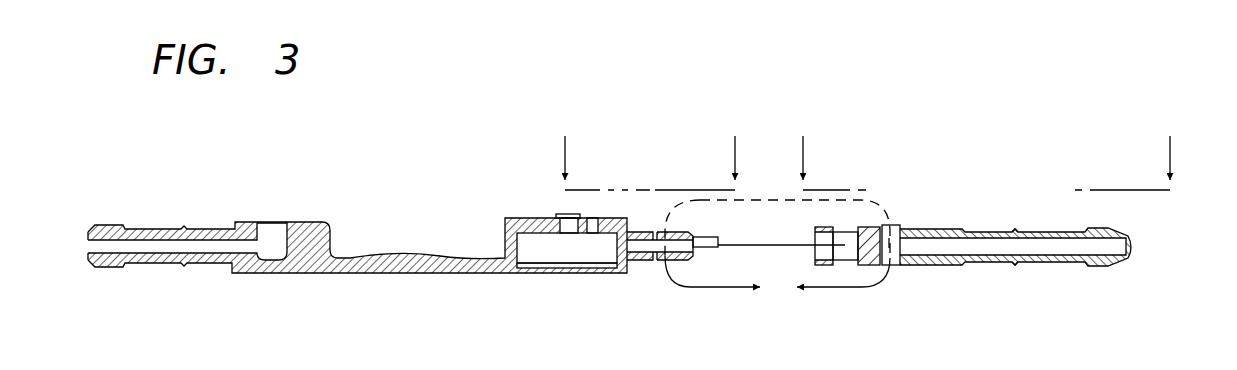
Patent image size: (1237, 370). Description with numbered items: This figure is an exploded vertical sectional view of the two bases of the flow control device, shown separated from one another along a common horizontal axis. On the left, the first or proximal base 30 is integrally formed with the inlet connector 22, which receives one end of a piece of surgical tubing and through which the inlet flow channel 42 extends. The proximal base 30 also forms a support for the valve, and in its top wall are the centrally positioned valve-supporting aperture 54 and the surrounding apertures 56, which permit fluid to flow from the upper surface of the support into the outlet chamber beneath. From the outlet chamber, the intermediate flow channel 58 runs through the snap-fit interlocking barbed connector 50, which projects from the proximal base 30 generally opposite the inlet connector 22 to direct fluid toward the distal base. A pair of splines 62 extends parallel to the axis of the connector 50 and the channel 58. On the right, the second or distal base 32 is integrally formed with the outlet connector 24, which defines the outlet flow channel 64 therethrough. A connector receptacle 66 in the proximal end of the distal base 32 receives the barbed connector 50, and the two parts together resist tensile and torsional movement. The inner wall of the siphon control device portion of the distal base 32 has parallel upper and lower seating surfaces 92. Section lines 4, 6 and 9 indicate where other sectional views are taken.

The inlet connector 22 is at (150, 229).
The inlet flow channel 42 is at (141, 254).
The first or proximal base 30 is at (386, 224).
The valve-supporting aperture 54 is at (568, 219).
The surrounding apertures 56 is at (594, 217).
The intermediate flow channel 58 is at (641, 262).
The snap-fit interlocking barbed connector 50 is at (668, 262).
The splines 62 is at (714, 237).
The connector receptacle 66 is at (824, 266).
The seating surfaces 92 is at (891, 268).
The second or distal base 32 is at (954, 276).
The outlet flow channel 64 is at (1040, 230).
The outlet connector 24 is at (1048, 266).
The section line 4- 4 is at (777, 252).
The section line 6- 6 is at (636, 163).
The section line 9- 9 is at (999, 163).